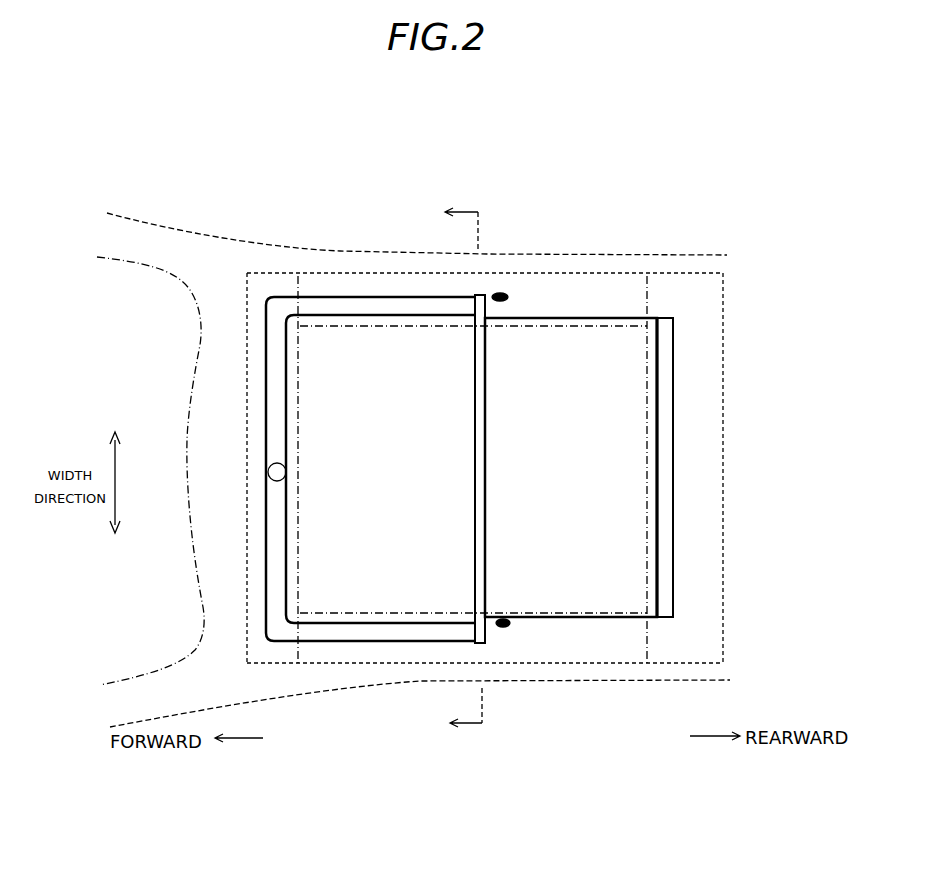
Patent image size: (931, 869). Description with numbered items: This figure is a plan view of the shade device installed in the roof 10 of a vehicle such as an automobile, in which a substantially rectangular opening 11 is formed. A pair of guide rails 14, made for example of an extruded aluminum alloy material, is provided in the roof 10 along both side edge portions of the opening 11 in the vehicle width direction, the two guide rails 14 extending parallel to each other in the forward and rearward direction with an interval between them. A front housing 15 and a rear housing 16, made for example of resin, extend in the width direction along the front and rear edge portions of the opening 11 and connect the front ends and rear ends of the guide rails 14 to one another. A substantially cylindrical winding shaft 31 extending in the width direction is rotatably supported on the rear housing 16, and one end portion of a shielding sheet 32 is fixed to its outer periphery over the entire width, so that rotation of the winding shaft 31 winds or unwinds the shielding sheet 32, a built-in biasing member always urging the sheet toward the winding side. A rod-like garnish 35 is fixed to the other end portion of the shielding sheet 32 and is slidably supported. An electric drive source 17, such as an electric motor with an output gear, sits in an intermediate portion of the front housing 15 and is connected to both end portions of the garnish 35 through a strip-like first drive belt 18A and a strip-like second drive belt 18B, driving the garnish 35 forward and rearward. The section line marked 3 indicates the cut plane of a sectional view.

The roof 10 is at (362, 249).
The opening 11 is at (364, 480).
The guide rails 14 is at (318, 270).
The front housing 15 is at (247, 378).
The rear housing 16 is at (724, 503).
The electric drive source 17 is at (268, 470).
The first drive belt 18A is at (288, 367).
The second drive belt 18B is at (266, 365).
The winding shaft 31 is at (665, 618).
The shielding sheet 32 is at (493, 474).
The garnish 35 is at (475, 434).
The section line III-III 3 is at (454, 467).